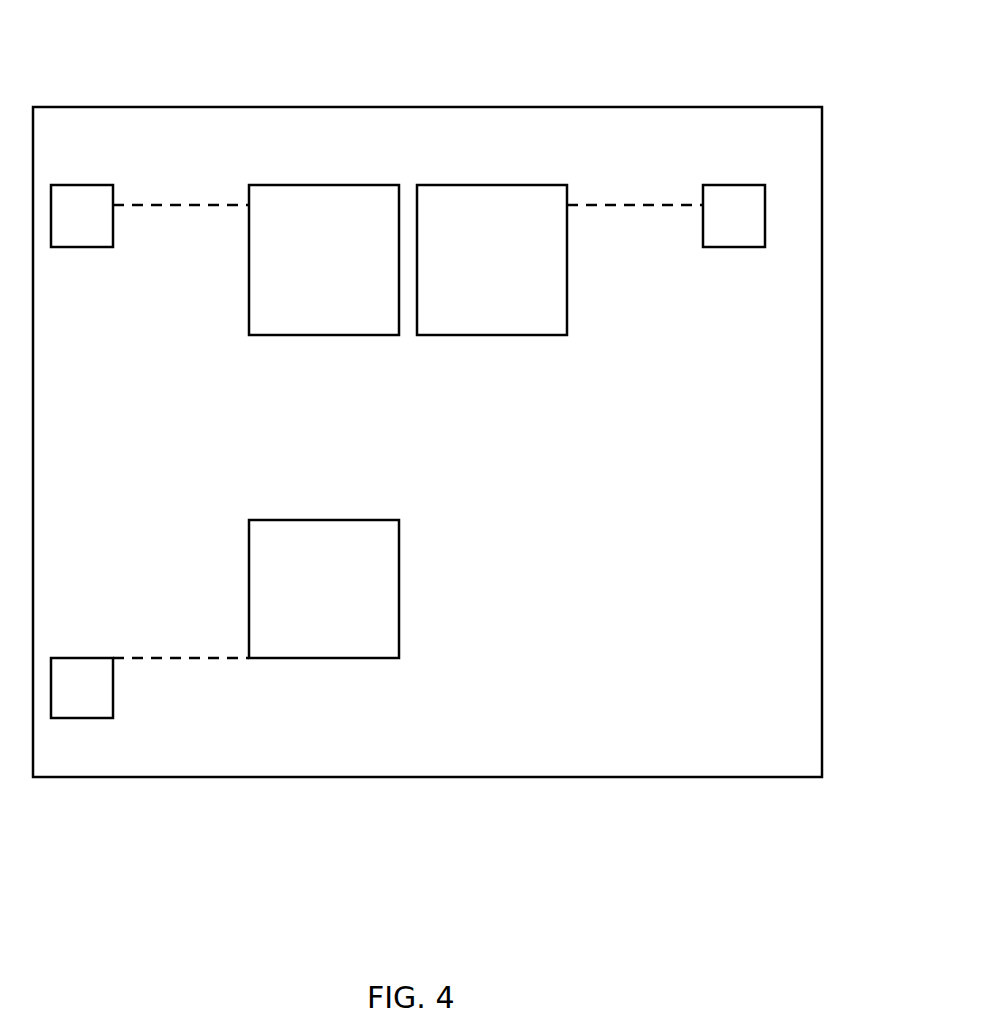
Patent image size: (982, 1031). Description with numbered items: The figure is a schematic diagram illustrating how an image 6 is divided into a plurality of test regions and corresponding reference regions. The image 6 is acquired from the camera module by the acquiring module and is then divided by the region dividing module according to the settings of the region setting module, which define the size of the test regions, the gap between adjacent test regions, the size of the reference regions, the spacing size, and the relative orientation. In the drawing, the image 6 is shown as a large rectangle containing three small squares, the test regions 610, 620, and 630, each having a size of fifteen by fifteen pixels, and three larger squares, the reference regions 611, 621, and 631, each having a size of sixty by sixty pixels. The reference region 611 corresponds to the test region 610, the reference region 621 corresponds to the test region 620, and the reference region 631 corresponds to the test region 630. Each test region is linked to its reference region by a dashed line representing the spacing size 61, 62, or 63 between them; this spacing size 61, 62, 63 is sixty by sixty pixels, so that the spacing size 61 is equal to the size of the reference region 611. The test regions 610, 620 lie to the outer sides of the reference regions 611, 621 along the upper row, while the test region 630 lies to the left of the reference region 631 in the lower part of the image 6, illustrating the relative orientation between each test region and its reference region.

The image 6 is at (822, 348).
The spacing size 61 is at (150, 203).
The test region 610 is at (72, 185).
The reference region 611 is at (270, 185).
The spacing size 62 is at (607, 205).
The test region 620 is at (727, 185).
The reference region 621 is at (447, 185).
The spacing size 63 is at (170, 660).
The test region 630 is at (92, 718).
The reference region 631 is at (399, 650).